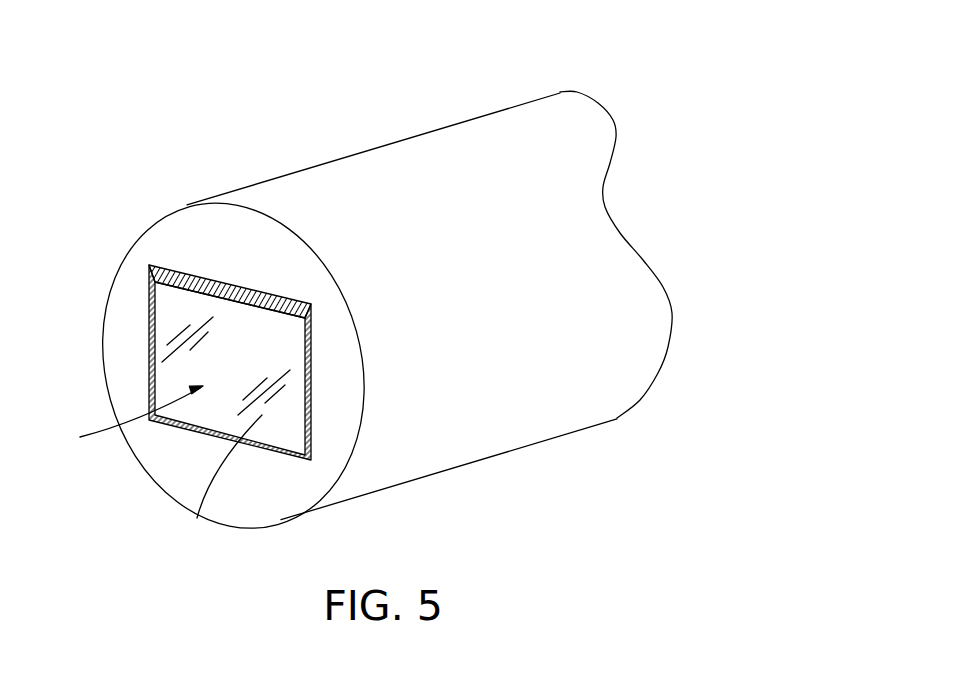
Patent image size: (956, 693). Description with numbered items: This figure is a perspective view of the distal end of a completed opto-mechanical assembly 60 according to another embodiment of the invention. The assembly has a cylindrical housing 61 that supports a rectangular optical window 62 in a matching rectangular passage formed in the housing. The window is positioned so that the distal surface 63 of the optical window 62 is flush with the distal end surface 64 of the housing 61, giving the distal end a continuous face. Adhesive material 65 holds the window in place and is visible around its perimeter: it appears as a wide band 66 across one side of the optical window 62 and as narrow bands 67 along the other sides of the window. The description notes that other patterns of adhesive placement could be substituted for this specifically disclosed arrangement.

The opto-mechanical assembly 60 is at (440, 105).
The cylindrical housing 61 is at (540, 398).
The optical window 62 is at (126, 418).
The distal surface 63 is at (202, 433).
The distal end surface 64 is at (267, 490).
The adhesive material 65 is at (166, 282).
The wide band 66 is at (182, 278).
The narrow bands 67 is at (148, 327).